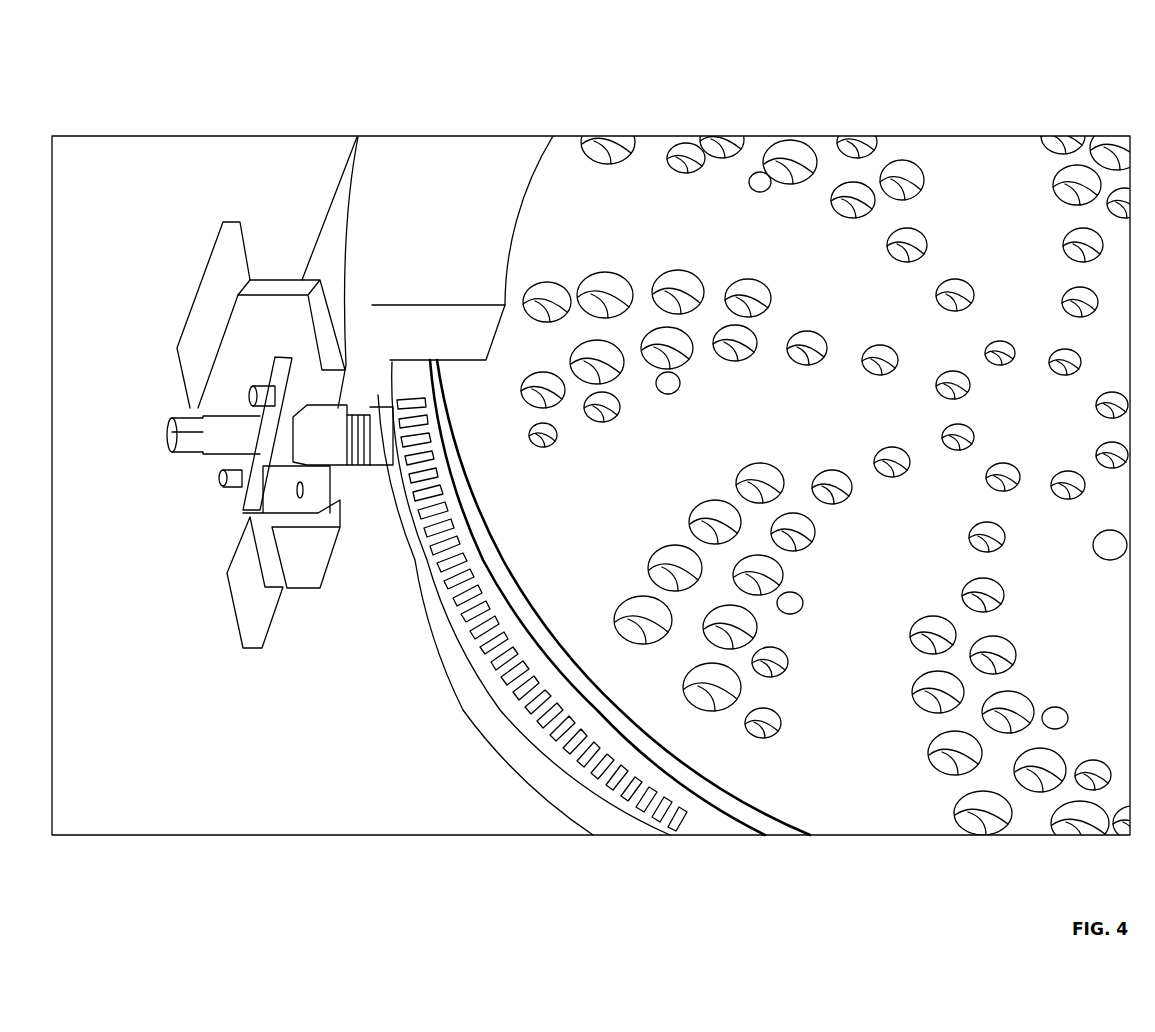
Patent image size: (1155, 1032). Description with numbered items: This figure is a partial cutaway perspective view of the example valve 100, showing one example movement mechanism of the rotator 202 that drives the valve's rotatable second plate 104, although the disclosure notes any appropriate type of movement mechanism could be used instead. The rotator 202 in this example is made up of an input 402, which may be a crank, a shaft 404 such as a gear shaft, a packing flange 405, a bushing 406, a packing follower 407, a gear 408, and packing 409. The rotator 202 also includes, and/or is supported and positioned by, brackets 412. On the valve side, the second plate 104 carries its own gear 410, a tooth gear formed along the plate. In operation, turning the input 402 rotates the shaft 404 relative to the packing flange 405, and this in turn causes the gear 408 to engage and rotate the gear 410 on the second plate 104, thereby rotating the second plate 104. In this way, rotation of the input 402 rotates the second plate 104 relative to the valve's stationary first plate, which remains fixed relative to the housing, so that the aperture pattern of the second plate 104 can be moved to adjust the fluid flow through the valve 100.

The valve 100 is at (978, 72).
The second plate 104 is at (463, 660).
The rotator 202 is at (175, 238).
The input 402 is at (168, 435).
The shaft 404 is at (245, 445).
The packing flange 405 is at (278, 363).
The bushing 406 is at (380, 430).
The packing follower 407 is at (315, 432).
The gear 408 is at (423, 398).
The packing 409 is at (357, 440).
The gear 410 is at (423, 560).
The brackets 412 is at (265, 290).